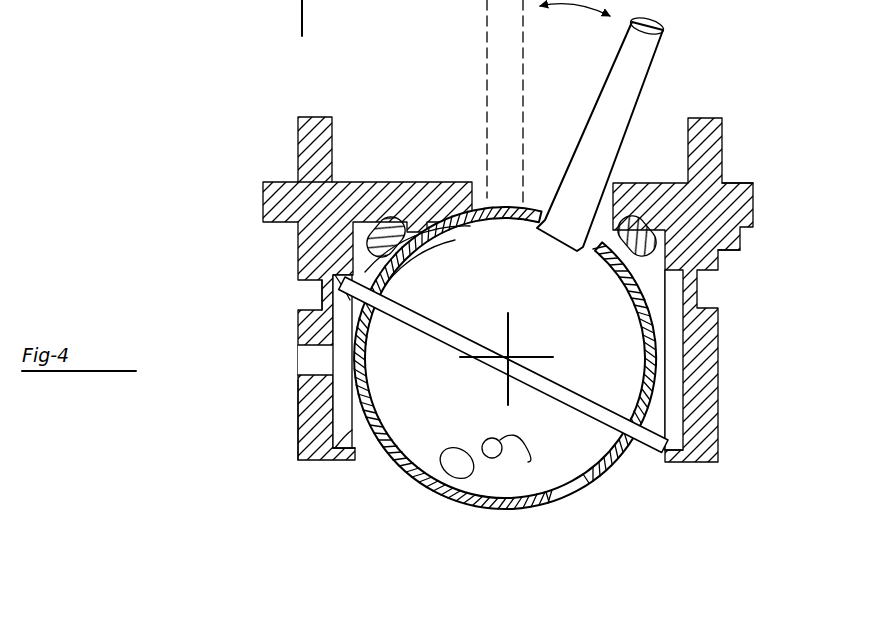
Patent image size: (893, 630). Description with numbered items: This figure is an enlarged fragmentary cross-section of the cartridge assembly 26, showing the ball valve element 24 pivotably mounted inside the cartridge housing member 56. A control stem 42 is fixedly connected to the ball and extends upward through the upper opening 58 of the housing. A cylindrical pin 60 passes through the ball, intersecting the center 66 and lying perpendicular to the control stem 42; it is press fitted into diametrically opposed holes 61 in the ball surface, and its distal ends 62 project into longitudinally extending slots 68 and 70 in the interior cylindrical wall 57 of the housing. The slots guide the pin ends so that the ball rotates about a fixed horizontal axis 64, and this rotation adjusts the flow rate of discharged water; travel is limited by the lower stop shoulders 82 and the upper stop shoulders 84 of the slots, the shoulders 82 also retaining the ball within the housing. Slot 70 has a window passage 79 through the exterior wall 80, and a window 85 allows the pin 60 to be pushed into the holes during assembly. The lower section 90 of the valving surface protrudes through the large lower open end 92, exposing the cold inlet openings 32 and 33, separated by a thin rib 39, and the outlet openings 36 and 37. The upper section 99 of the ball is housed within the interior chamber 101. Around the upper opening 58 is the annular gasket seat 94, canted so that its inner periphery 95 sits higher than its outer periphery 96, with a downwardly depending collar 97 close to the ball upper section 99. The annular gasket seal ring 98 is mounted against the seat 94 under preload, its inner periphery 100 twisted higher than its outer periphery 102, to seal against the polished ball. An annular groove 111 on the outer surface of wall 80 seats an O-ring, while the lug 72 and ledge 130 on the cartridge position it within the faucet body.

The ball valve element 24 is at (548, 515).
The cartridge assembly 26 is at (745, 112).
The cold inlet opening 32 is at (455, 475).
The cold inlet opening 33 is at (520, 460).
The outlet opening 36 is at (365, 397).
The outlet opening 37 is at (570, 498).
The rib 39 is at (505, 512).
The control stem 42 is at (594, 112).
The cartridge housing member 56 is at (722, 332).
The interior cylindrical wall 57 is at (700, 218).
The upper opening 58 is at (473, 205).
The cylindrical pin 60 is at (597, 400).
The holes 61 is at (408, 300).
The distal ends of pin 62 is at (297, 254).
The horizontal axis 64 is at (522, 372).
The center of ball valve 66 is at (522, 350).
The slot 68 is at (675, 358).
The slot 70 is at (343, 424).
The lug 72 is at (730, 240).
The window passage 79 is at (303, 358).
The exterior wall 80 is at (297, 402).
The abutment shoulders 82 is at (312, 440).
The upper stop shoulders 84 is at (365, 352).
The window 85 is at (600, 170).
The lower section of valving surface 90 is at (463, 507).
The lower open end 92 is at (385, 460).
The annular gasket seat 94 is at (357, 182).
The inner periphery of gasket seat 95 is at (372, 232).
The outer periphery of gasket seat 96 is at (365, 212).
The collar 97 is at (583, 210).
The annular gasket seal ring 98 is at (325, 228).
The upper section of ball element 99 is at (452, 205).
The inner periphery of gasket seal ring 100 is at (450, 237).
The interior chamber 101 is at (370, 272).
The outer periphery of gasket seal ring 102 is at (413, 260).
The annular groove 111 is at (303, 297).
The ledge 130 is at (752, 182).